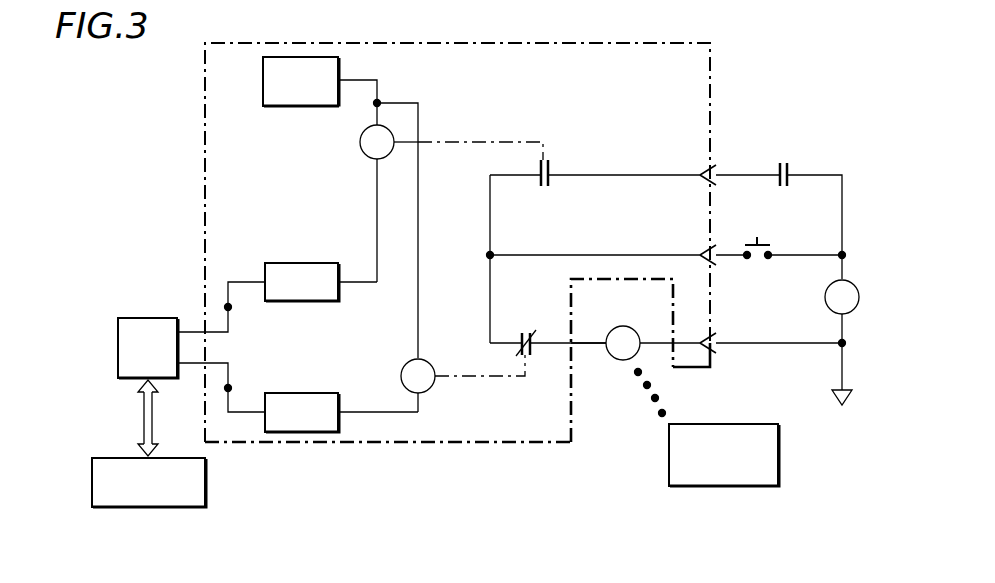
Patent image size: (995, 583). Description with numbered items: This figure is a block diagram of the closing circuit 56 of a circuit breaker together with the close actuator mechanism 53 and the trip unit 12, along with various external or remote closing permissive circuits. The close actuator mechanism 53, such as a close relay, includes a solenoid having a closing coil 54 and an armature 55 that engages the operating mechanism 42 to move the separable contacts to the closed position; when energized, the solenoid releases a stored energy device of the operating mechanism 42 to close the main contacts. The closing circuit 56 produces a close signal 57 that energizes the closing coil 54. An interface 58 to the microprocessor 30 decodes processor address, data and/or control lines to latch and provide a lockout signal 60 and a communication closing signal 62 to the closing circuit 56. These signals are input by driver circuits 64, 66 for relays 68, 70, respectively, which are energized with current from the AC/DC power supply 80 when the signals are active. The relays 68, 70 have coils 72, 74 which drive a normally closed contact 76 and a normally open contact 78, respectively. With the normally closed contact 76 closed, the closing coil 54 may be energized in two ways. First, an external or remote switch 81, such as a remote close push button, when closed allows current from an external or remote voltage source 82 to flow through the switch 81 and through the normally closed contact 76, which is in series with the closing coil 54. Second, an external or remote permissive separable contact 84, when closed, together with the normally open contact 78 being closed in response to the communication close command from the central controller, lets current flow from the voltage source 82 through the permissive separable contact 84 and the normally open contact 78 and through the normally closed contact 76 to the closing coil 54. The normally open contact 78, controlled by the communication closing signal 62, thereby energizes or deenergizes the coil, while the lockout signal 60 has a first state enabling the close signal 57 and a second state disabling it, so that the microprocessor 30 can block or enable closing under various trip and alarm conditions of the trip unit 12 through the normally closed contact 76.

The trip unit 12 is at (112, 432).
The microprocessor 30 is at (104, 457).
The operating mechanism 42 is at (779, 470).
The close actuator mechanism 53 is at (626, 366).
The closing coil 54 is at (616, 325).
The armature 55 is at (659, 398).
The closing circuit 56 is at (470, 443).
The close signal 57 is at (588, 345).
The interface 58 is at (118, 332).
The lockout signal 60 is at (231, 387).
The communication closing signal 62 is at (231, 308).
The driver circuit 64 is at (324, 393).
The driver circuit 66 is at (278, 262).
The relay 68 is at (456, 379).
The relay 70 is at (349, 203).
The coil 72 is at (455, 392).
The coil 74 is at (364, 176).
The normally closed contact 76 is at (524, 331).
The normally open contact 78 is at (544, 186).
The AC/DC power supply 80 is at (272, 106).
The switch 81 is at (758, 260).
The voltage source 82 is at (858, 302).
The permissive separable contact 84 is at (783, 186).